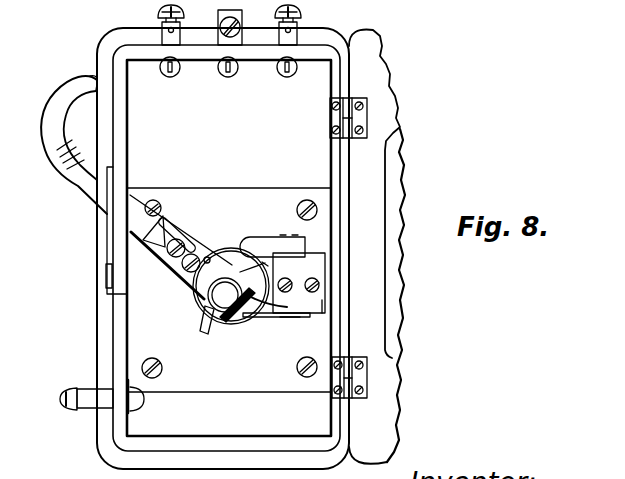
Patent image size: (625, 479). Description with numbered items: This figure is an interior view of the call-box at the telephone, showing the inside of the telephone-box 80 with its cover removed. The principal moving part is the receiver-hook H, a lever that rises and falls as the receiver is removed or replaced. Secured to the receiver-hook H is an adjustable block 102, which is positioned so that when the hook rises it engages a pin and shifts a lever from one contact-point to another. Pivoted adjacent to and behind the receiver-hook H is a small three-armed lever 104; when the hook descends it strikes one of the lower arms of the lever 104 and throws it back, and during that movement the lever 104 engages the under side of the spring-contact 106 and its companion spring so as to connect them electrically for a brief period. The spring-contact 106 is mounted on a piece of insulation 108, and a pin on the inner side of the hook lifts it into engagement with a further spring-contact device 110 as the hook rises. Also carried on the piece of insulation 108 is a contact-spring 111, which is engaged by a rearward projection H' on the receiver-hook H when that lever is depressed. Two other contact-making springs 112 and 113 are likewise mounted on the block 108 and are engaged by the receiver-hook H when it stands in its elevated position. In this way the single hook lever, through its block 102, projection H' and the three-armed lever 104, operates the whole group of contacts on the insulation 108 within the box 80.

The telephone-box 80 is at (349, 43).
The receiver-hook H is at (70, 148).
The adjustable block 102 is at (165, 232).
The three-armed lever 104 is at (207, 316).
The spring-contact 106 is at (267, 262).
The piece of insulation 108 is at (322, 307).
The spring-contact device 110 is at (264, 238).
The contact-spring 111 is at (273, 268).
The contact-making spring 112 is at (278, 318).
The contact-making spring 113 is at (287, 318).
The rearward projection H' is at (278, 301).